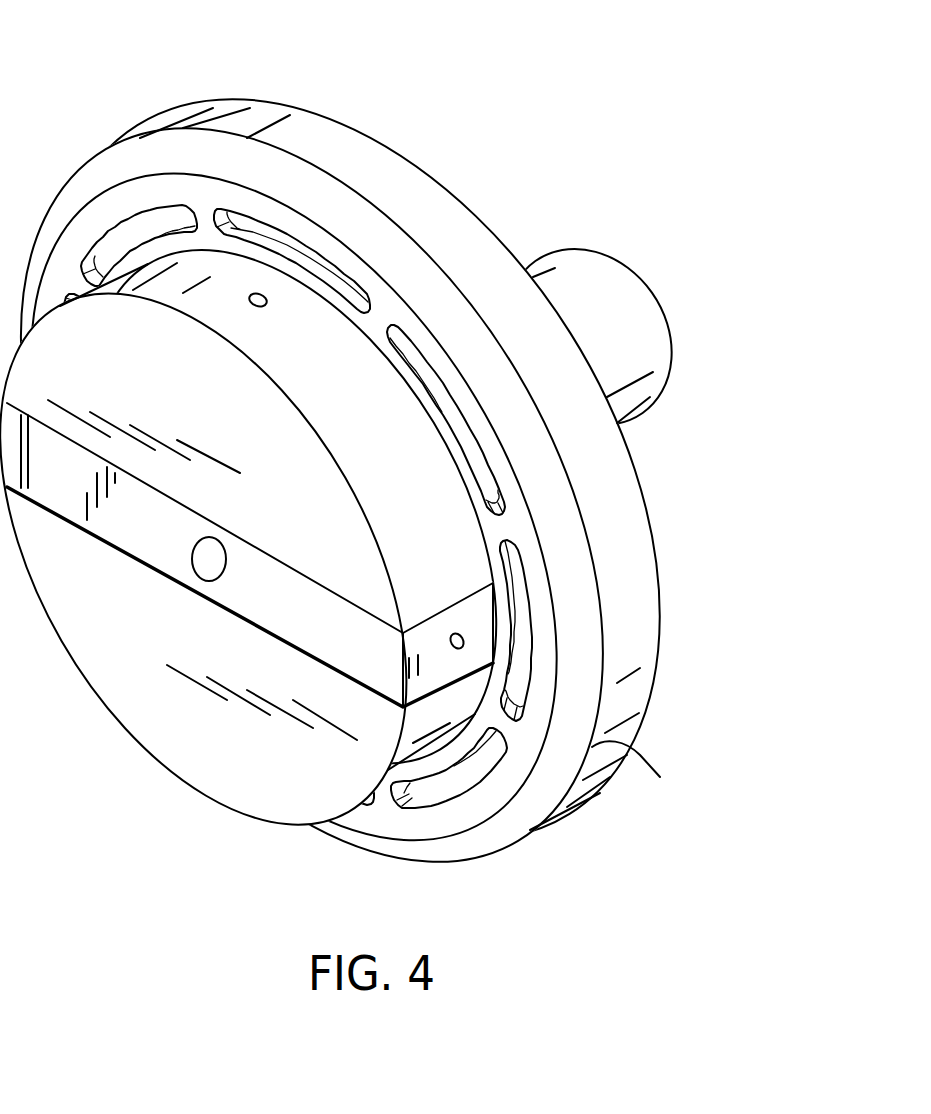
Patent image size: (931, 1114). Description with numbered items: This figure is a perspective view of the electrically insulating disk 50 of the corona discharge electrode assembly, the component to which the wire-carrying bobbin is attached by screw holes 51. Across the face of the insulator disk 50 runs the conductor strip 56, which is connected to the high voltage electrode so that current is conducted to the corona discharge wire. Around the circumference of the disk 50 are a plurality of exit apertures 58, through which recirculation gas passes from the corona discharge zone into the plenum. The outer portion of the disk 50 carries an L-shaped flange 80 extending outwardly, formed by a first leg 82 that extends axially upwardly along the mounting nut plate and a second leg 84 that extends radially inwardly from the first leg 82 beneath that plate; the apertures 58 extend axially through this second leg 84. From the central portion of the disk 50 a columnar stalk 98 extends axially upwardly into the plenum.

The electrically insulating disk 50 is at (123, 698).
The screw holes 51 is at (268, 302).
The conductor strip 56 is at (118, 523).
The exit apertures 58 is at (177, 213).
The L-shaped flange 80 is at (592, 747).
The first leg 82 is at (640, 687).
The second leg 84 is at (545, 793).
The columnar stalk 98 is at (553, 278).